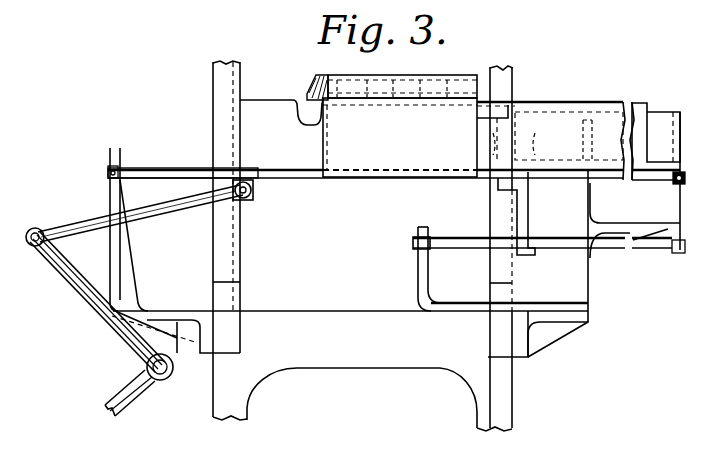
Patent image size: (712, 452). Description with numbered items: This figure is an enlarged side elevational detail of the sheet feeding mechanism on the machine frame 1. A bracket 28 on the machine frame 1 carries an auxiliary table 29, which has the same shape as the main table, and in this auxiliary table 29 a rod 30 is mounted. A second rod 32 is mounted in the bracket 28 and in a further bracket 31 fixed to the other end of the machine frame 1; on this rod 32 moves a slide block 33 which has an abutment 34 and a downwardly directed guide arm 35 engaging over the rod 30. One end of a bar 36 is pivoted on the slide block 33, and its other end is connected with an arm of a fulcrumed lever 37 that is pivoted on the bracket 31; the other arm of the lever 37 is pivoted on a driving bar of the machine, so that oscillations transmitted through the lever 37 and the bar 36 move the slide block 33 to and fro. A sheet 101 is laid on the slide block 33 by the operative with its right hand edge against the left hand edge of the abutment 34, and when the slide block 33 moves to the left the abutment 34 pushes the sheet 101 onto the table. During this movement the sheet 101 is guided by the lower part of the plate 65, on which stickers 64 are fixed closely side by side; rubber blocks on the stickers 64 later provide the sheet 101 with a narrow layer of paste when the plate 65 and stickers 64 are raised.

The machine frame 1 is at (365, 325).
The bracket 28 is at (553, 320).
The auxiliary table 29 is at (658, 118).
The rod 30 is at (668, 249).
The bracket 31 is at (125, 282).
The rod 32 is at (164, 178).
The slide block 33 is at (303, 140).
The abutment 34 is at (488, 115).
The guide arm 35 is at (528, 222).
The bar 36 is at (183, 203).
The fulcrumed lever 37 is at (82, 278).
The stickers 64 is at (311, 93).
The plate 65 is at (340, 90).
The sheet 101 is at (427, 145).